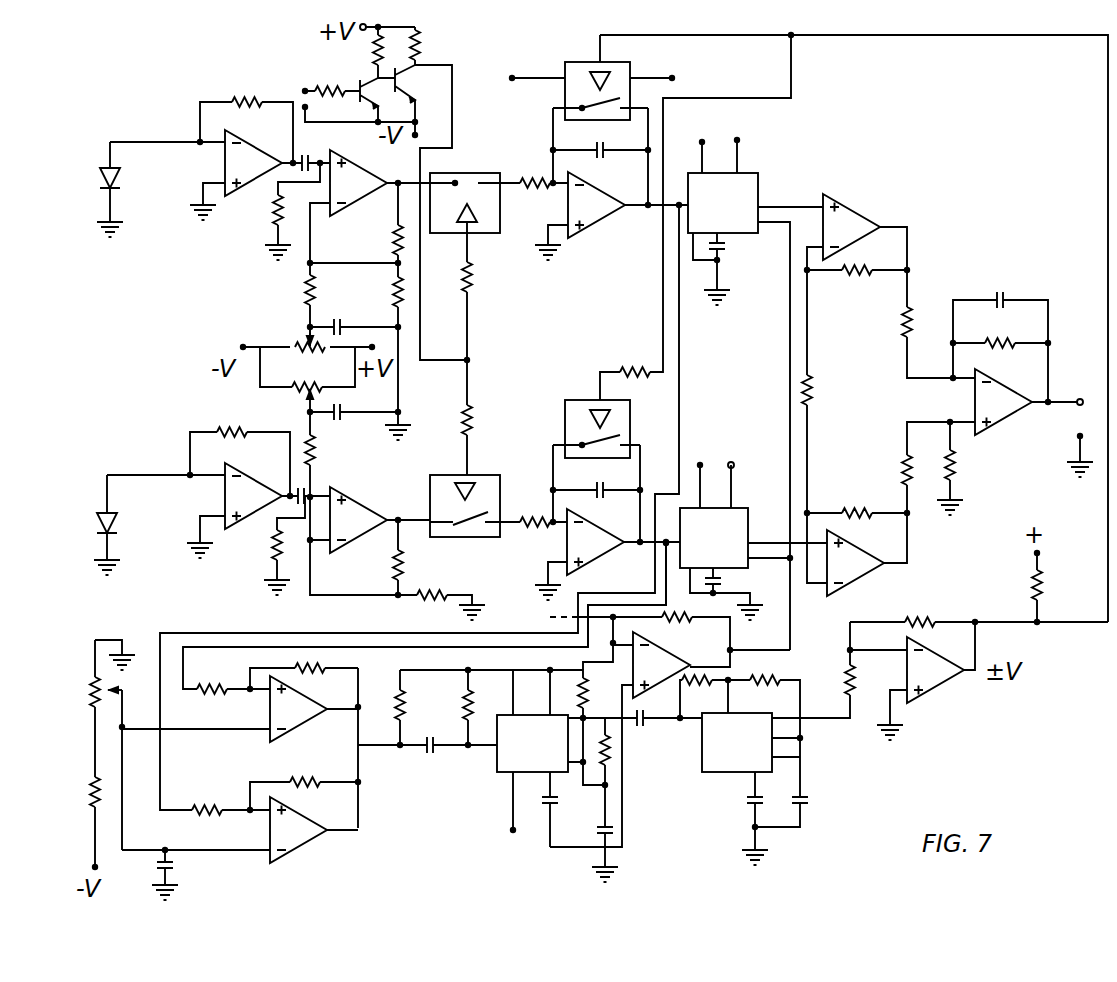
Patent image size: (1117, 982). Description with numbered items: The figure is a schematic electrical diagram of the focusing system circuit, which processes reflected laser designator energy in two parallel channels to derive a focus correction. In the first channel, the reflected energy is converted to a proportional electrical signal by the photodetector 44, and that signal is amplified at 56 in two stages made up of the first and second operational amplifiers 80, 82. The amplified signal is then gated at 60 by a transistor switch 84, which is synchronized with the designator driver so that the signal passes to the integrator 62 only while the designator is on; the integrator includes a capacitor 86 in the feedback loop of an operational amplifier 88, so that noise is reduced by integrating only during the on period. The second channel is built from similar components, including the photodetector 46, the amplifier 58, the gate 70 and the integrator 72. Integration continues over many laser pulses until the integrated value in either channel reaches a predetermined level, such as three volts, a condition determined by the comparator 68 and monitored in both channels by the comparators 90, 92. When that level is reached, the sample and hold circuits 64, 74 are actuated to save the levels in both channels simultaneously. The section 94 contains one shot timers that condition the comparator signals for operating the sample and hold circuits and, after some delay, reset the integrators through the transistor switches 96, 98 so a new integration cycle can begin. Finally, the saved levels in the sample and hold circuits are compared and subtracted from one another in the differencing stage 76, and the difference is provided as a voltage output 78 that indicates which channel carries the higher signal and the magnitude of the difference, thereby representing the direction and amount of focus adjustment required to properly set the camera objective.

The photodetector 44 is at (100, 172).
The photodetector 46 is at (97, 522).
The amplifier 56 is at (186, 196).
The amplifier 58 is at (178, 519).
The gate 60 is at (478, 300).
The integrator 62 is at (600, 232).
The sample and hold circuit 64 is at (752, 245).
The comparator 68 is at (392, 790).
The gate 70 is at (500, 465).
The integrator 72 is at (552, 545).
The sample and hold circuit 74 is at (752, 472).
The differencing stage 76 is at (990, 450).
The voltage output 78 is at (1081, 398).
The first operational amplifier 80 is at (222, 163).
The second operational amplifier 82 is at (364, 208).
The transistor switch 84 is at (470, 176).
The capacitor 86 is at (600, 165).
The operational amplifier 88 is at (560, 208).
The comparator 90 is at (315, 728).
The comparator 92 is at (315, 847).
The section 94 is at (670, 800).
The transistor switch 96 is at (636, 75).
The transistor switch 98 is at (572, 400).